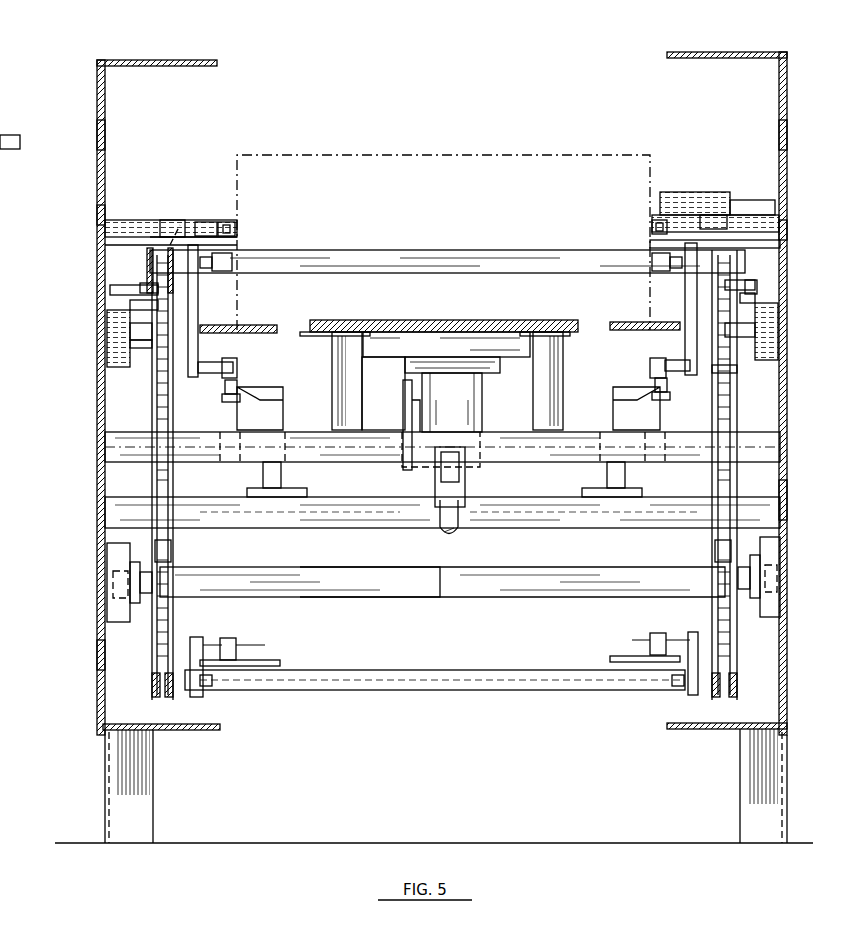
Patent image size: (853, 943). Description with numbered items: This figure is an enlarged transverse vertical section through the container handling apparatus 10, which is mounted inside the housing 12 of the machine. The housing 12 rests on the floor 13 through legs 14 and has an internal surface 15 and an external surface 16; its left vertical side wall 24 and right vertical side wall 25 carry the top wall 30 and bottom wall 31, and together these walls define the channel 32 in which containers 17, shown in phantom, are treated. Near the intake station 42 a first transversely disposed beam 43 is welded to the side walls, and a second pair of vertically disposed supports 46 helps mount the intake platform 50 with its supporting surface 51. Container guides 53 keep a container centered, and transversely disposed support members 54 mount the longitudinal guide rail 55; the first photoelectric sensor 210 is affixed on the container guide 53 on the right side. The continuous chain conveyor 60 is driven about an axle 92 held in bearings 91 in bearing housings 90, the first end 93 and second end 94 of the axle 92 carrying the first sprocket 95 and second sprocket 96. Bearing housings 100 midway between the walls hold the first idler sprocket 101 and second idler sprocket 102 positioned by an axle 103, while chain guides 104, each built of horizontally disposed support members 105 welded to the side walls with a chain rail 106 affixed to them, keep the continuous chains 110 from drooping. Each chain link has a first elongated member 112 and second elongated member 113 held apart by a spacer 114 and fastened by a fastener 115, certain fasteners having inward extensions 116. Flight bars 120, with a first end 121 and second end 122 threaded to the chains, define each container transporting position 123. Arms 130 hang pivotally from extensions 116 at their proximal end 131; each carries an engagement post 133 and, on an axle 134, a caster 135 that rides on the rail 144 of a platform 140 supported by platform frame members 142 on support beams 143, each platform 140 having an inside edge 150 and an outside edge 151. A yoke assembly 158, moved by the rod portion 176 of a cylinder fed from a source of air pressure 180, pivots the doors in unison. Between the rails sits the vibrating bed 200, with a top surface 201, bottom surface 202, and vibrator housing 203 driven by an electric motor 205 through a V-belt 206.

The apparatus 10 is at (97, 413).
The housing 12 is at (97, 105).
The floor 13 is at (470, 843).
The legs 14 is at (135, 790).
The internal surface 15 is at (105, 133).
The external surface 16 is at (97, 665).
The containers 17 is at (500, 155).
The left vertical side wall 24 is at (97, 215).
The right vertical side wall 25 is at (787, 230).
The top wall 30 is at (145, 60).
The bottom wall 31 is at (195, 730).
The channel 32 is at (438, 75).
The intake station 42 is at (500, 322).
The first transversely disposed beam 43 is at (105, 440).
The second pair of vertically disposed supports 46 is at (345, 360).
The intake platform 50 is at (400, 340).
The supporting surface 51 is at (435, 320).
The container guides 53 is at (168, 222).
The transversely disposed support members 54 is at (200, 225).
The guide rail 55 is at (235, 228).
The continuous chain conveyor 60 is at (220, 624).
The bearing housings 90 is at (112, 612).
The bearing 91 is at (130, 575).
The axle 92 is at (418, 580).
The first end 93 is at (185, 578).
The second end 94 is at (712, 575).
The first sprocket 95 is at (171, 547).
The second sprocket 96 is at (715, 543).
The bearing housings 100 is at (107, 334).
The first idler sprocket 101 is at (125, 345).
The second idler sprocket 102 is at (735, 370).
The axle 103 is at (128, 335).
The chain guides 104 is at (110, 293).
The bearing support 105 is at (130, 303).
The chain rail 106 is at (140, 285).
The continuous chains 110 is at (160, 240).
The first elongated member 112 is at (105, 241).
The second elongated member 113 is at (237, 241).
The spacer 114 is at (178, 275).
The fastener 115 is at (183, 222).
The extensions 116 is at (214, 261).
The flight bars 120 is at (450, 252).
The first end 121 is at (228, 270).
The second end 122 is at (658, 270).
The container transporting position 123 is at (410, 205).
The arms 130 is at (635, 273).
The proximal end 131 is at (650, 239).
The engagement post 133 is at (255, 325).
The axle 134 is at (222, 362).
The caster 135 is at (238, 352).
The platforms 140 is at (152, 420).
The platform frame members 142 is at (300, 412).
The support beams 143 is at (340, 515).
The rail 144 is at (245, 390).
The inside edge 150 is at (237, 373).
The outside edge 151 is at (222, 396).
The yoke assembly 158 is at (225, 430).
The rod portion 176 is at (460, 512).
The source of air pressure 180 is at (3, 130).
The vibrating bed 200 is at (428, 353).
The top surface 201 is at (420, 332).
The bottom surface 202 is at (518, 360).
The vibrator housing 203 is at (438, 394).
The electric motor 205 is at (480, 480).
The V-belt 206 is at (403, 395).
The first photoelectric sensor 210 is at (695, 203).